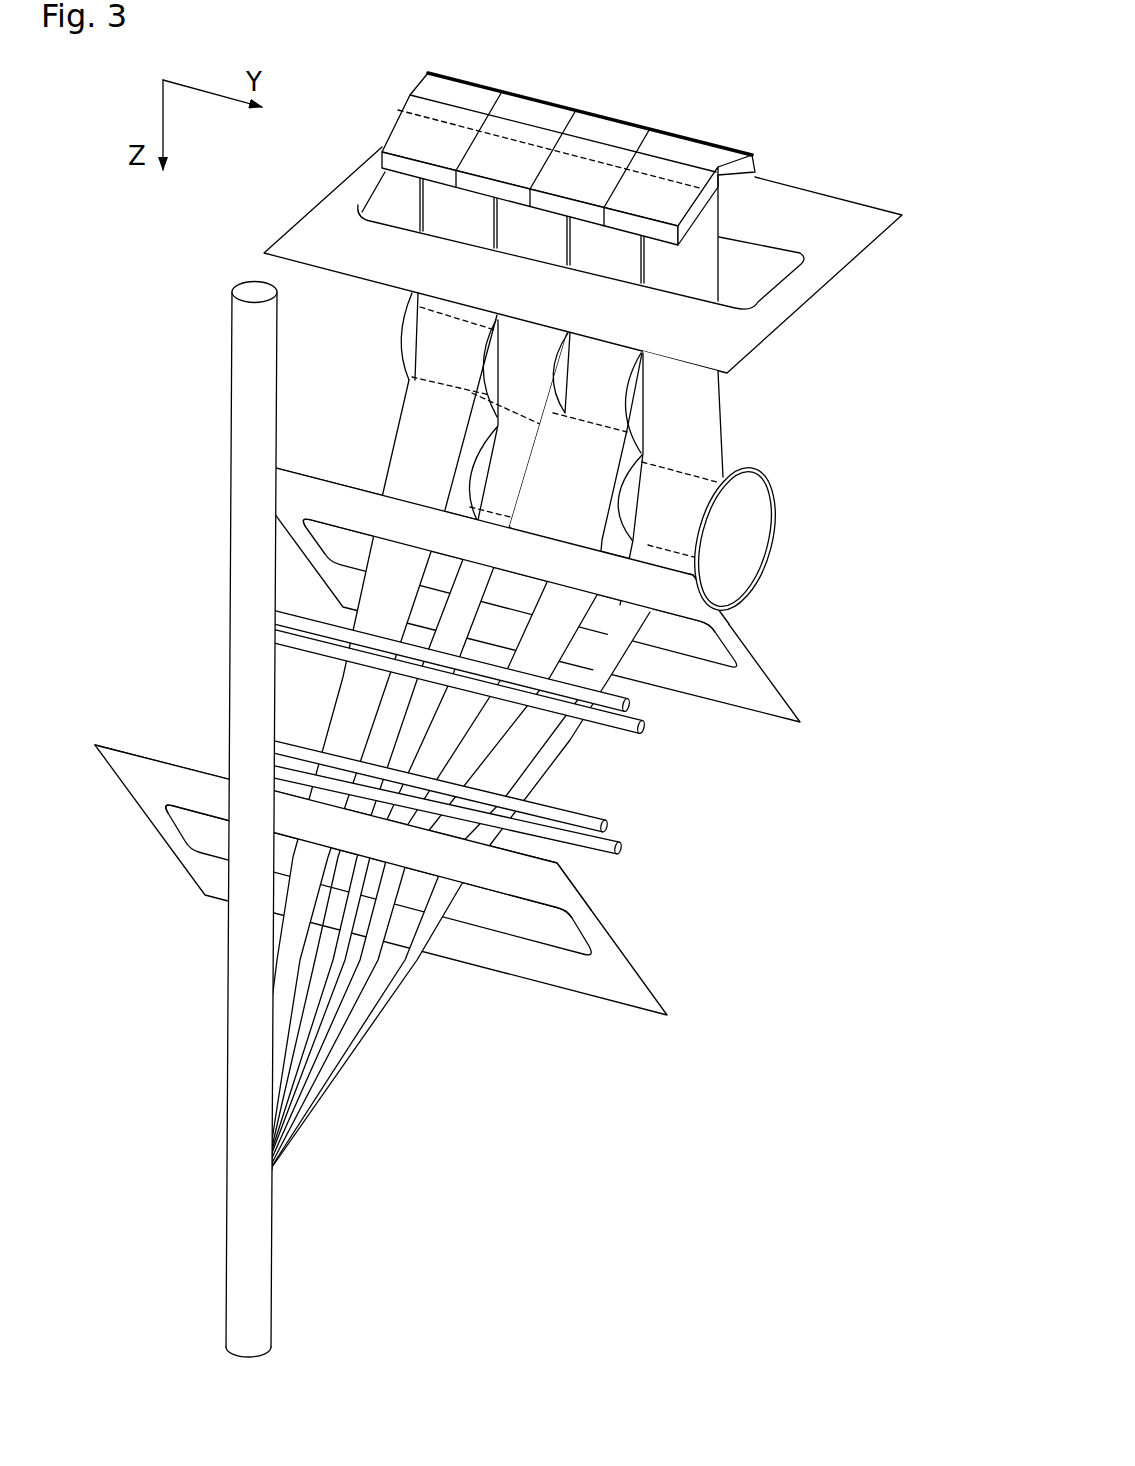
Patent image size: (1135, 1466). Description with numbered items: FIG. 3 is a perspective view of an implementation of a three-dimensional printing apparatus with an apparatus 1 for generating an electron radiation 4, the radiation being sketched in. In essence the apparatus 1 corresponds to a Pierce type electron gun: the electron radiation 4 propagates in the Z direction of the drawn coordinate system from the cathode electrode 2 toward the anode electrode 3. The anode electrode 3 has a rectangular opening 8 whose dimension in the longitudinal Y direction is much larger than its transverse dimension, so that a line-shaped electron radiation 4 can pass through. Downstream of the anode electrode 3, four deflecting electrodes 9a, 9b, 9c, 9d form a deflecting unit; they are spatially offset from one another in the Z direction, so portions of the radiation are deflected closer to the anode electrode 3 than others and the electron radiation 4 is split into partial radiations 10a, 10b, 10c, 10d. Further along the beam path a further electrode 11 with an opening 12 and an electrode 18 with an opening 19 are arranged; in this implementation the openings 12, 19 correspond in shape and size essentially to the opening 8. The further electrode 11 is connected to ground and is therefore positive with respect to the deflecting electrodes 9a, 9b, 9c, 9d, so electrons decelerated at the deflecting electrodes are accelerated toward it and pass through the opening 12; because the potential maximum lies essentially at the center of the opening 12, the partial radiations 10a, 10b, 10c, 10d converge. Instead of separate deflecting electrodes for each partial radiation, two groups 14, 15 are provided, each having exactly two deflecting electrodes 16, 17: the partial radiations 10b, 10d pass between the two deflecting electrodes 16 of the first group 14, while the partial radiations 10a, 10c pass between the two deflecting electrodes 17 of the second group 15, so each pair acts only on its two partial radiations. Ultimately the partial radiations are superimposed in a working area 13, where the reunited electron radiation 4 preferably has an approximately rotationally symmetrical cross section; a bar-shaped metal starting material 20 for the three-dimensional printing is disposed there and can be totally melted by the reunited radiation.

The apparatus 1 is at (499, 715).
The cathode electrode 2 is at (759, 158).
The anode electrode 3 is at (597, 240).
The electron radiation 4 is at (510, 672).
The opening 8 is at (770, 273).
The deflecting electrode 9a is at (584, 672).
The deflecting electrode 9b is at (571, 748).
The deflecting electrode 9c is at (344, 736).
The deflecting electrode 9d is at (311, 716).
The partial radiation 10a is at (625, 637).
The partial radiation 10b is at (598, 455).
The partial radiation 10c is at (467, 588).
The partial radiation 10d is at (390, 595).
The further electrode 11 is at (777, 683).
The opening 12 is at (519, 593).
The working area 13 is at (287, 1157).
The first group 14 is at (473, 707).
The second group 15 is at (524, 827).
The deflecting electrodes 16 is at (327, 645).
The deflecting electrodes 17 is at (557, 816).
The electrode 18 is at (442, 880).
The opening 19 is at (568, 943).
The bar-shaped starting material 20 is at (245, 1278).